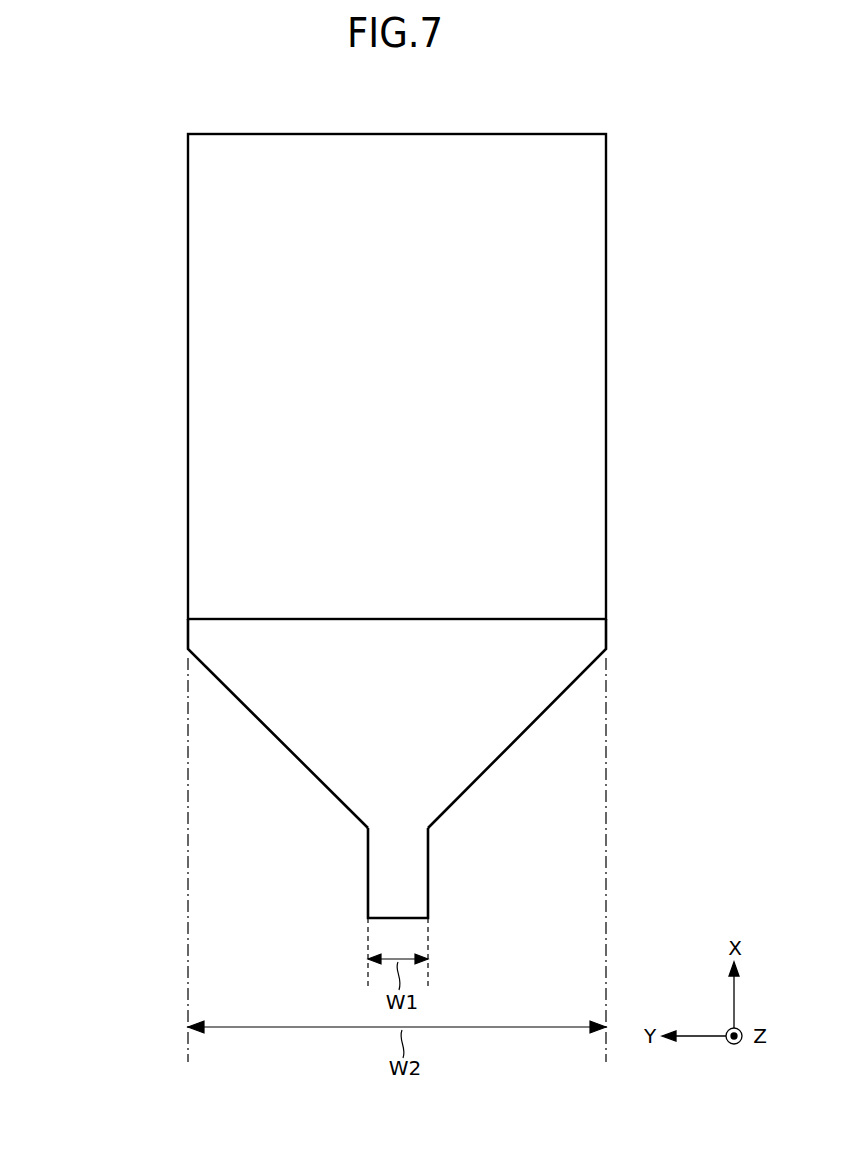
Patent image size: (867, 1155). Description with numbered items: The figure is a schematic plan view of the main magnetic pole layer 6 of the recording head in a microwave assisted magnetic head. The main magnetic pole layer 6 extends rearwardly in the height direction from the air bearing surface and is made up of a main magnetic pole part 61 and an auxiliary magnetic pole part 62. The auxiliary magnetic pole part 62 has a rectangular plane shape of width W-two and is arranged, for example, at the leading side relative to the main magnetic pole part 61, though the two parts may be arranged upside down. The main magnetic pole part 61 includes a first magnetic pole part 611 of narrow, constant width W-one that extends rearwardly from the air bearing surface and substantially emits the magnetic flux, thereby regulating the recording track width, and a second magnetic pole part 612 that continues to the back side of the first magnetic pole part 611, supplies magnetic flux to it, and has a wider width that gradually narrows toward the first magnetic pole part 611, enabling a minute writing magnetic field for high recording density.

The main magnetic pole layer 6 is at (75, 628).
The auxiliary magnetic pole part 62 is at (230, 619).
The main magnetic pole part 61 is at (125, 767).
The second magnetic pole part 612 is at (317, 778).
The first magnetic pole part 611 is at (368, 877).